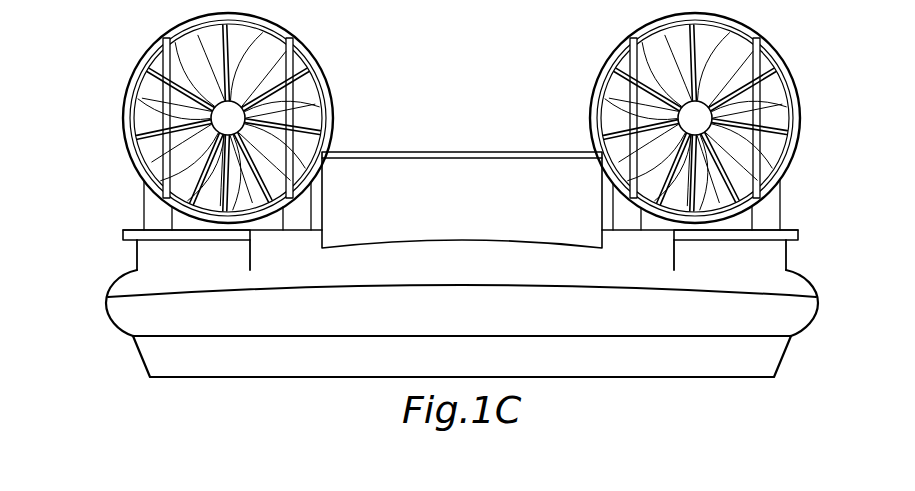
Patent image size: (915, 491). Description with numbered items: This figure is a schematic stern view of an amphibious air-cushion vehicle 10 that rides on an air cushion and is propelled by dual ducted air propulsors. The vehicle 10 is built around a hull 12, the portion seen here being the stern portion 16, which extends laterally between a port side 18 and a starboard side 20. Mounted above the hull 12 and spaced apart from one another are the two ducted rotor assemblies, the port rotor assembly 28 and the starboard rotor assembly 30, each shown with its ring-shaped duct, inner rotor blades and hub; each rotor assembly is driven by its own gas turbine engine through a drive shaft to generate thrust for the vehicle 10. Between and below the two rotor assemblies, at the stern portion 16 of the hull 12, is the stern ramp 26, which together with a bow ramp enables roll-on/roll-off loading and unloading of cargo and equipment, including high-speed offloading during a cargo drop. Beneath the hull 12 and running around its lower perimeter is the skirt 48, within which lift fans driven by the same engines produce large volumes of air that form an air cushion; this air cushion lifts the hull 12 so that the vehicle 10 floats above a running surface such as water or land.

The amphibious air-cushion vehicle 10 is at (532, 64).
The hull 12 is at (792, 228).
The stern portion 16 is at (477, 321).
The port side 18 is at (118, 282).
The starboard side 20 is at (806, 283).
The stern ramp 26 is at (475, 208).
The port rotor assembly 28 is at (138, 68).
The starboard rotor assembly 30 is at (786, 70).
The skirt 48 is at (120, 322).